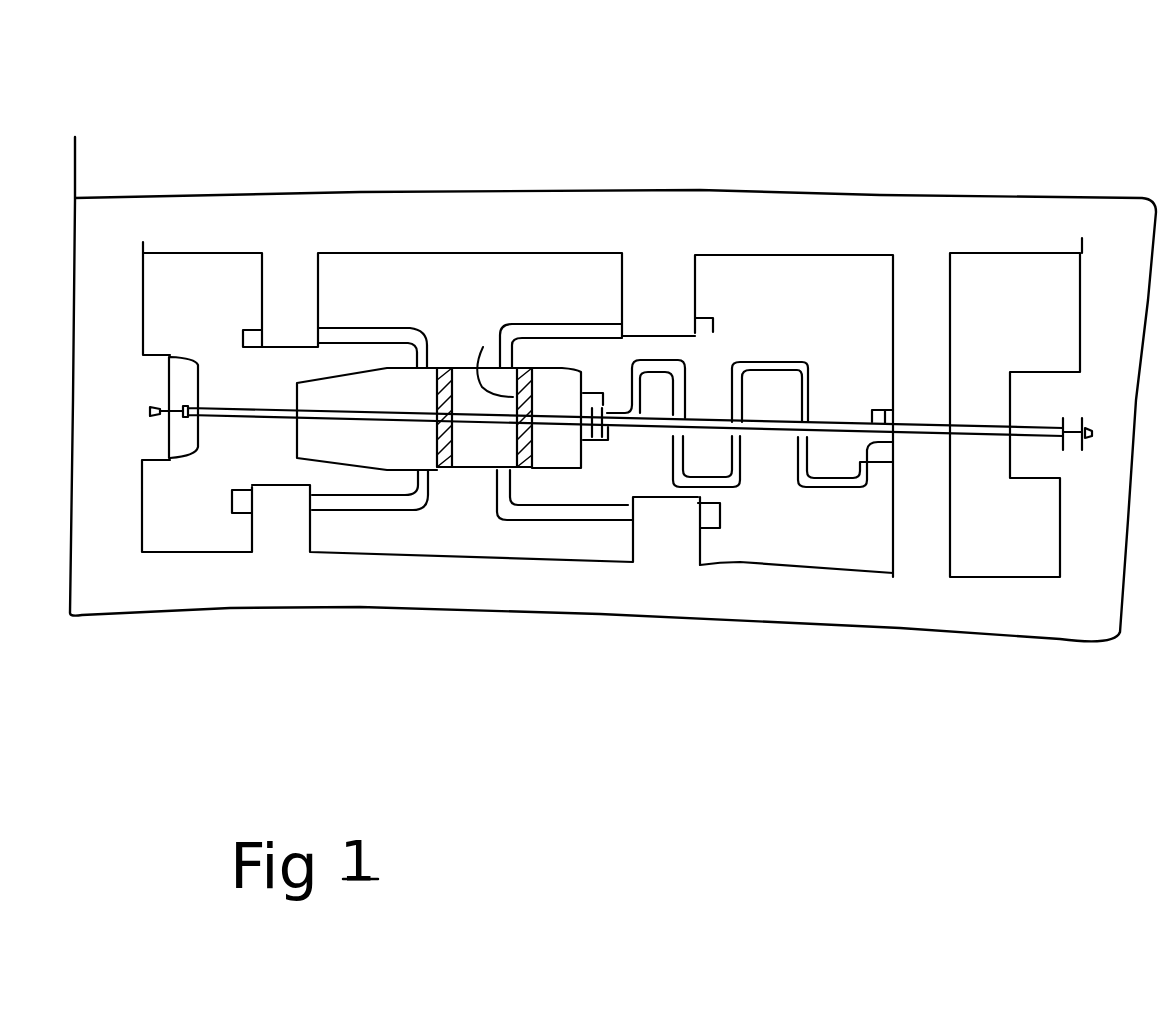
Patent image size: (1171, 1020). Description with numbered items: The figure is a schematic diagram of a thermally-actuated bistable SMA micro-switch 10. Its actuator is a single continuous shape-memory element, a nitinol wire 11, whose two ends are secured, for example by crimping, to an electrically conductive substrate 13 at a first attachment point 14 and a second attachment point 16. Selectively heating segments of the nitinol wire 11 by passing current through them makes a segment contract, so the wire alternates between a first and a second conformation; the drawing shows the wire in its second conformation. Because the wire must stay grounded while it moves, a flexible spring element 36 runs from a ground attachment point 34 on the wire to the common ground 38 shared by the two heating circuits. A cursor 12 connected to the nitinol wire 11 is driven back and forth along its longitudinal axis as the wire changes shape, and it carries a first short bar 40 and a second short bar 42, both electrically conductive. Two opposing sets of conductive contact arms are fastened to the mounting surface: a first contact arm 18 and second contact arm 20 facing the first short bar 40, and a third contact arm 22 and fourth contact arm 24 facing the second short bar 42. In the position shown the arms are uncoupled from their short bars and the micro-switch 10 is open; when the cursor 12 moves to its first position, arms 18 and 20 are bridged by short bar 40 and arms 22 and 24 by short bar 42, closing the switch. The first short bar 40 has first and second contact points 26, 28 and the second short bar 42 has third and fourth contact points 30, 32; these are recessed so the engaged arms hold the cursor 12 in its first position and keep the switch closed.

The bistable SMA micro-switch 10 is at (946, 62).
The nitinol wire 11 is at (236, 424).
The cursor 12 is at (346, 383).
The substrate 13 is at (673, 113).
The first attachment point 14 is at (170, 358).
The second attachment point 16 is at (1078, 407).
The first contact arm 18 is at (370, 332).
The second contact arm 20 is at (318, 493).
The third contact arm 22 is at (543, 321).
The fourth contact arm 24 is at (557, 527).
The first contact point 26 is at (442, 367).
The second contact point 28 is at (447, 472).
The third contact point 30 is at (522, 368).
The fourth contact point 32 is at (523, 470).
The ground attachment point 34 is at (595, 407).
The spring element 36 is at (783, 358).
The common ground 38 is at (887, 407).
The first short bar 40 is at (453, 448).
The second short bar 42 is at (486, 359).